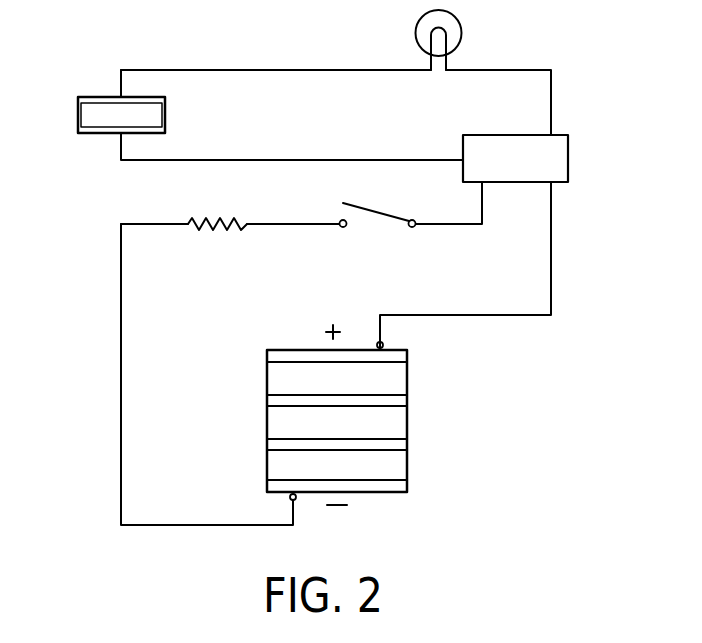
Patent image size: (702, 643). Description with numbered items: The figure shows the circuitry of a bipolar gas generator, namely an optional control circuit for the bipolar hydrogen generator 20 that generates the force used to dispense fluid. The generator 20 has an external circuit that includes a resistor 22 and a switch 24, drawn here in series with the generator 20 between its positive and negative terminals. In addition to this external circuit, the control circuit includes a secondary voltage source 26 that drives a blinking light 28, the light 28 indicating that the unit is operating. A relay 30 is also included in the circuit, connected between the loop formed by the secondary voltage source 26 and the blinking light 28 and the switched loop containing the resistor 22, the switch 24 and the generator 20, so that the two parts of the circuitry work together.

The bipolar hydrogen generator 20 is at (409, 418).
The resistor 22 is at (211, 222).
The switch 24 is at (375, 214).
The secondary voltage source 26 is at (93, 97).
The blinking light 28 is at (415, 34).
The relay 30 is at (570, 158).